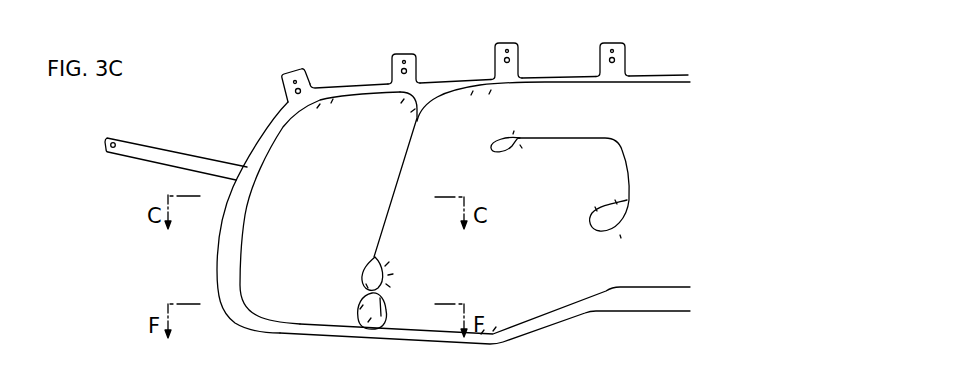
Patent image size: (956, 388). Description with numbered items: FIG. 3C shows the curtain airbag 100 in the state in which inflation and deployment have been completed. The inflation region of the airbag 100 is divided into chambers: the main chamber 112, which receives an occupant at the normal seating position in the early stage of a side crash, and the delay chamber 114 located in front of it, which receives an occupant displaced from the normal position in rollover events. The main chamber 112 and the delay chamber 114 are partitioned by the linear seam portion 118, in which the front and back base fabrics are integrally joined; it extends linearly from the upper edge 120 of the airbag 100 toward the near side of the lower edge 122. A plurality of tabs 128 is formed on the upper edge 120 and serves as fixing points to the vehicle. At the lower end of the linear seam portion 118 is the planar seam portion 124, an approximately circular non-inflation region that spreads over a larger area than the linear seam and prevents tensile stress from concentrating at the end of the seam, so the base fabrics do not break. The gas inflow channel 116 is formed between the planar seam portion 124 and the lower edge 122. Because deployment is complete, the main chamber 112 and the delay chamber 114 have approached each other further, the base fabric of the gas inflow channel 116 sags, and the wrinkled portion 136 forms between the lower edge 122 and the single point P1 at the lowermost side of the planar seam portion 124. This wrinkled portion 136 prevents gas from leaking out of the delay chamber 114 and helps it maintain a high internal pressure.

The airbag 100 is at (556, 58).
The main chamber 112 is at (560, 197).
The delay chamber 114 is at (287, 157).
The gas inflow channel 116 is at (384, 306).
The linear seam portion 118 is at (404, 150).
The upper edge 120 is at (428, 97).
The lower edge 122 is at (312, 334).
The planar seam portion 124 is at (362, 269).
The tab 128 is at (293, 72).
The wrinkled portion 136 is at (360, 305).
The single point P1 is at (366, 284).